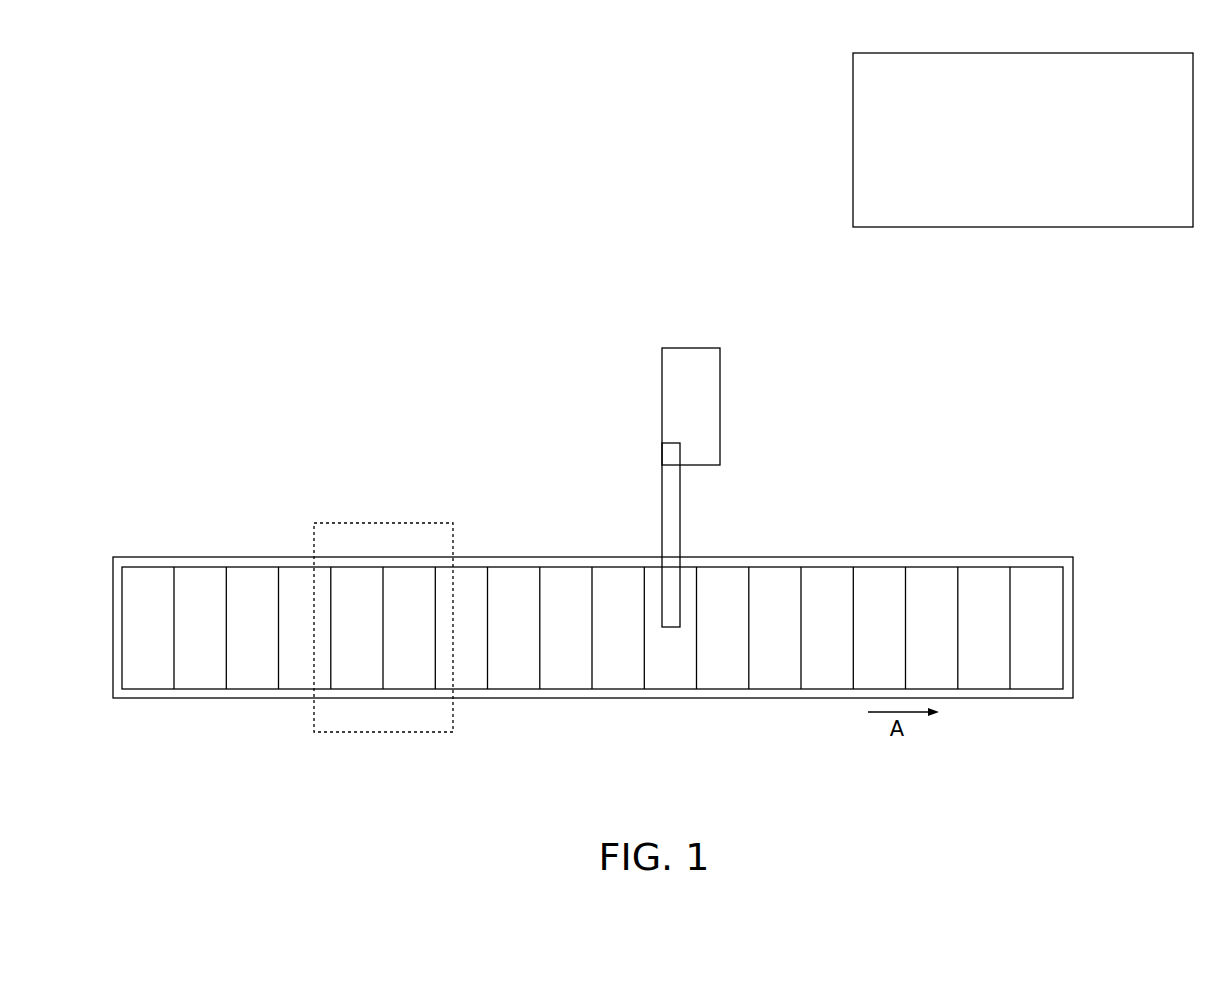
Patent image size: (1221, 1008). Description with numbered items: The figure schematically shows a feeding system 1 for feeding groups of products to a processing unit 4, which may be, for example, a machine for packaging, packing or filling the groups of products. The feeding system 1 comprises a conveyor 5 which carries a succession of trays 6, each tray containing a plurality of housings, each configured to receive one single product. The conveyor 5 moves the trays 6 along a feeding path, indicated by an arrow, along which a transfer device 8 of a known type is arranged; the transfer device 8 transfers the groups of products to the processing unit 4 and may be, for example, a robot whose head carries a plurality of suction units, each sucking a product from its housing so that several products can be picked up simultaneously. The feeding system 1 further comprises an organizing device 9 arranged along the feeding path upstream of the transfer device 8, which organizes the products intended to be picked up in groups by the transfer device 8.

The feeding system 1 is at (593, 690).
The processing unit 4 is at (1086, 235).
The conveyor 5 is at (1022, 567).
The trays 6 is at (147, 578).
The transfer device 8 is at (708, 410).
The organizing device 9 is at (382, 523).